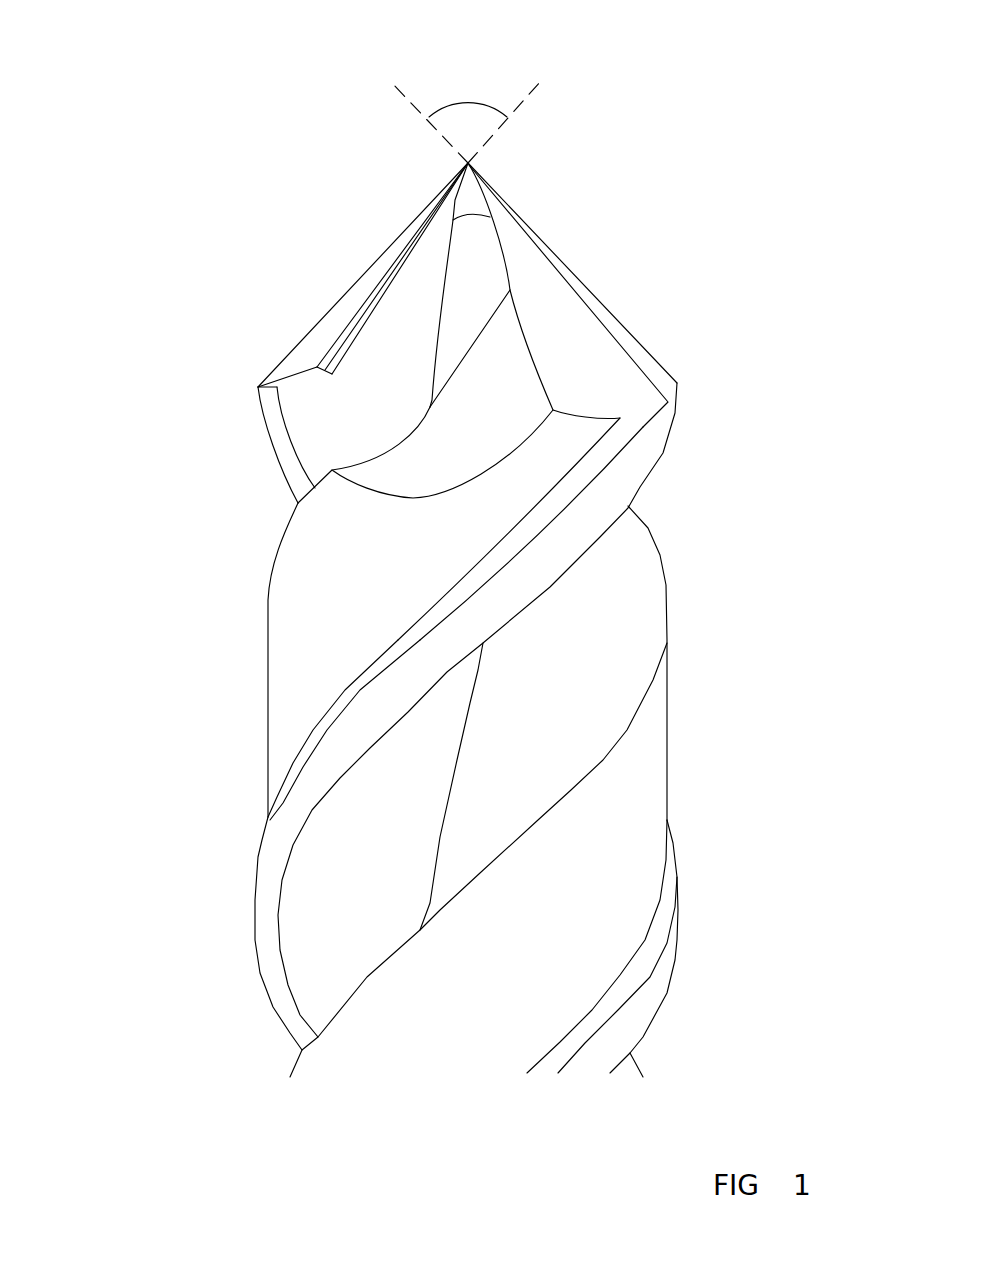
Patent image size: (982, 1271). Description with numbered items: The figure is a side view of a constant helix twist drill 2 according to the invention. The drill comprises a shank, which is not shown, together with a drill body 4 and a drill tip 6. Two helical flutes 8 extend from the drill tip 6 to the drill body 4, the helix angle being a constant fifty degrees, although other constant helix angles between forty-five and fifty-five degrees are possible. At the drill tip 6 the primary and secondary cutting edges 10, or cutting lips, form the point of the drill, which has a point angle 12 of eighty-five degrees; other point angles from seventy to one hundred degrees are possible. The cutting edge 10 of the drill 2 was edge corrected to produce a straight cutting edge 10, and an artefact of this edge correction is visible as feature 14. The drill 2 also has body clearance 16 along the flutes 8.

The twist drill 2 is at (166, 375).
The drill body 4 is at (703, 393).
The drill tip 6 is at (673, 260).
The helical flutes 8 is at (603, 618).
The cutting edge 10 is at (333, 291).
The point angle 12 is at (465, 80).
The edge correction feature 14 is at (359, 363).
The body clearance 16 is at (320, 777).